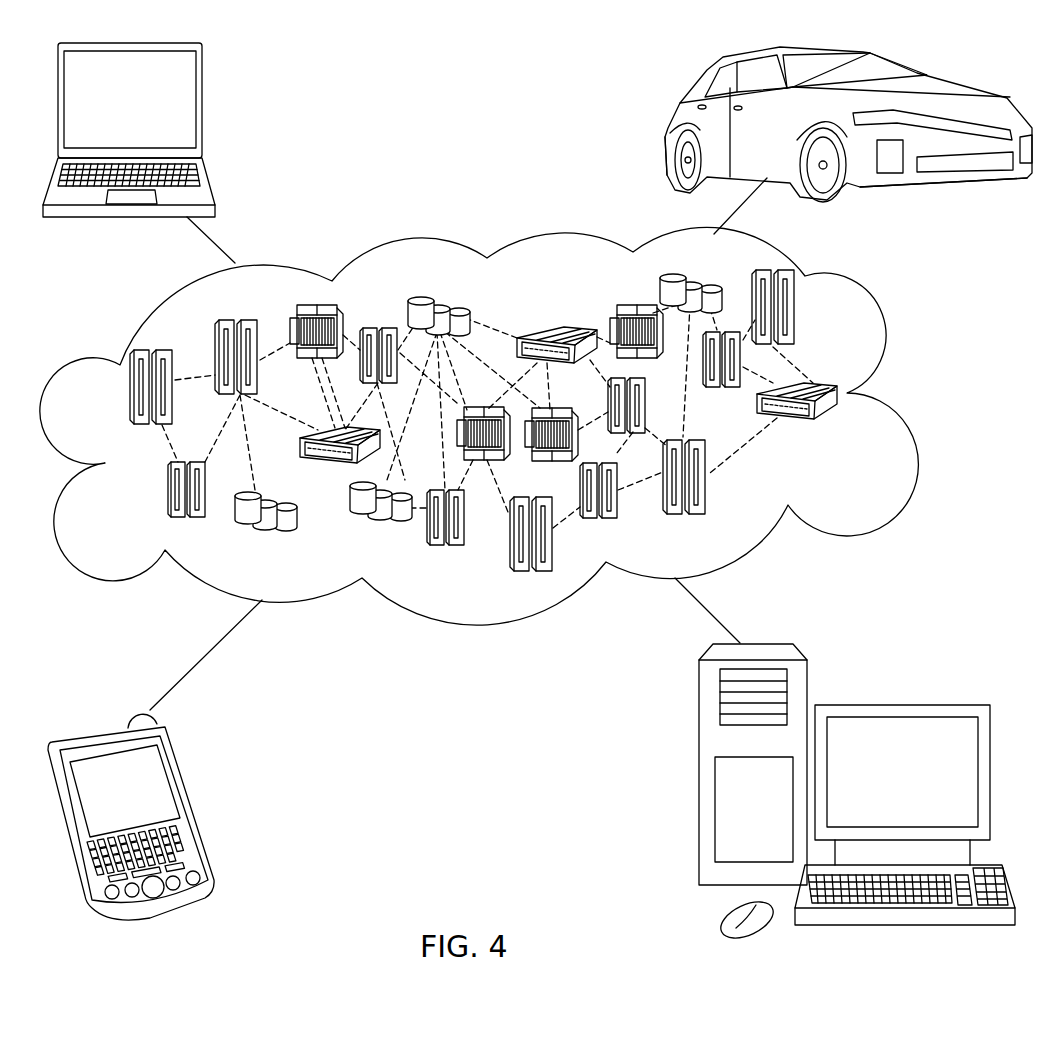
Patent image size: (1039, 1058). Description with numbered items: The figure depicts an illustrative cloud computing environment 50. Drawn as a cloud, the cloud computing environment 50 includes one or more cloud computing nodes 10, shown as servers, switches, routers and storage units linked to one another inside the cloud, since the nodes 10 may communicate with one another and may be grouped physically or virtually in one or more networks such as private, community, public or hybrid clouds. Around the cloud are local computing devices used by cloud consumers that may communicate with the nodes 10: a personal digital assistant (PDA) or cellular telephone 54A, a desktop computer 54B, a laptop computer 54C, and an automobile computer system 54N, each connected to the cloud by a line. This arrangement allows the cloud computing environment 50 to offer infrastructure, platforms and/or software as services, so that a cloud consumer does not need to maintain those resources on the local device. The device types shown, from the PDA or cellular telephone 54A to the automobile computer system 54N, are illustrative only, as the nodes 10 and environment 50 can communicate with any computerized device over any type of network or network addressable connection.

The cloud computing node 10 is at (847, 433).
The cloud computing environment 50 is at (897, 398).
The personal digital assistant (PDA) or cellular telephone 54A is at (193, 803).
The desktop computer 54B is at (900, 703).
The laptop computer 54C is at (203, 108).
The automobile computer system 54N is at (668, 128).